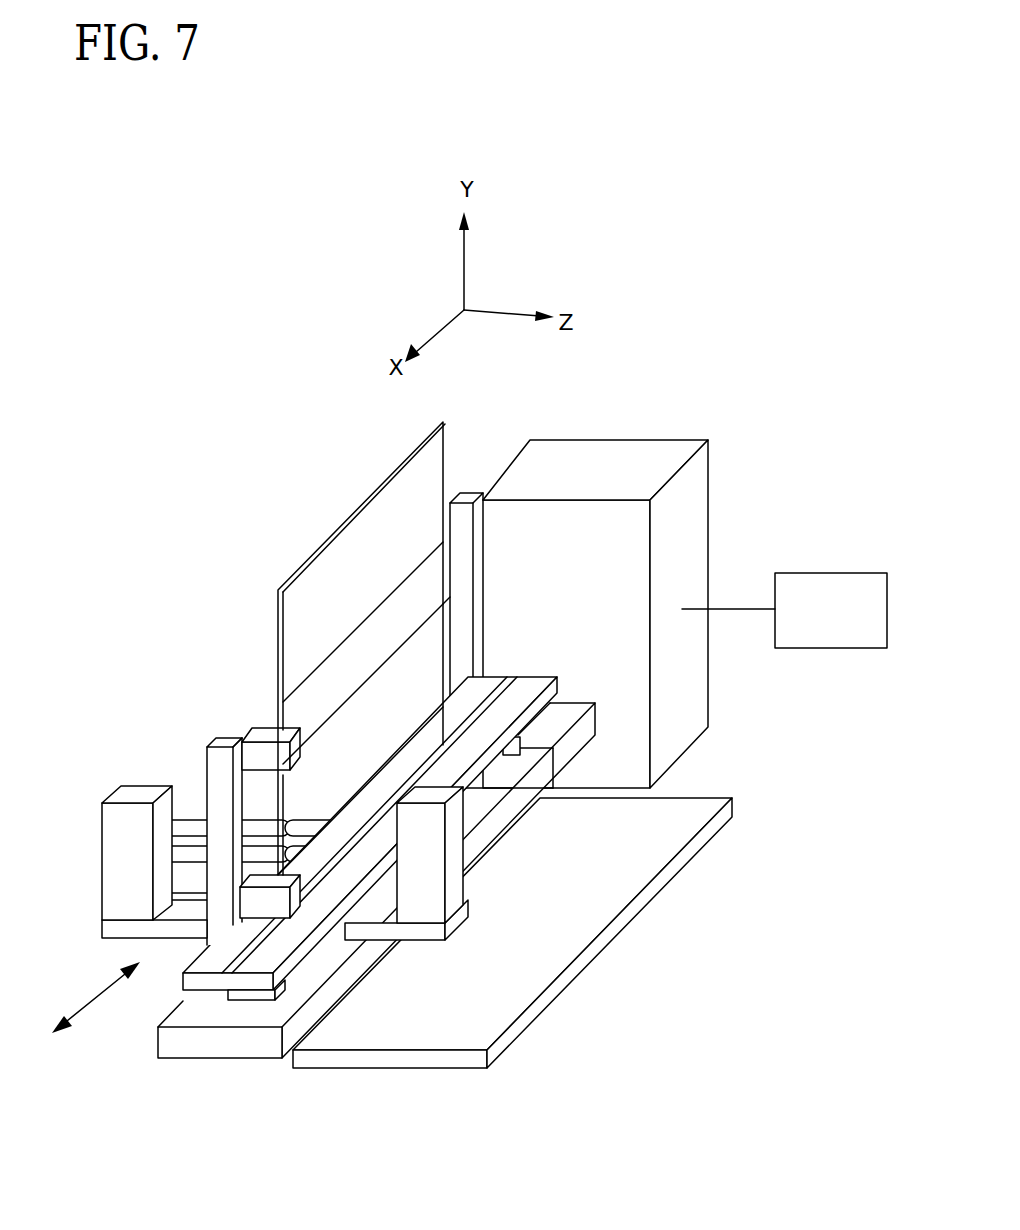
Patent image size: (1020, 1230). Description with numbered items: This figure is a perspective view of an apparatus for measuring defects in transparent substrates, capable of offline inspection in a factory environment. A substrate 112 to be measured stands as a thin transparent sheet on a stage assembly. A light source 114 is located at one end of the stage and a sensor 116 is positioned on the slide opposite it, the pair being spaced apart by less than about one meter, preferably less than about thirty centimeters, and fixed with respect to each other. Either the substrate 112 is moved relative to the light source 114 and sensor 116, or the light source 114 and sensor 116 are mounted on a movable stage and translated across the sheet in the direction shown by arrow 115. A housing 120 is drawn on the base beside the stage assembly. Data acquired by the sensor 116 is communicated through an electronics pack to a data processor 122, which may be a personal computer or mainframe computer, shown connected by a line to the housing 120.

The substrate 112 is at (320, 548).
The light source 114 is at (133, 796).
The arrow 115 is at (100, 993).
The sensor 116 is at (422, 898).
The drive unit housing 120 is at (621, 466).
The data processor 122 is at (840, 628).